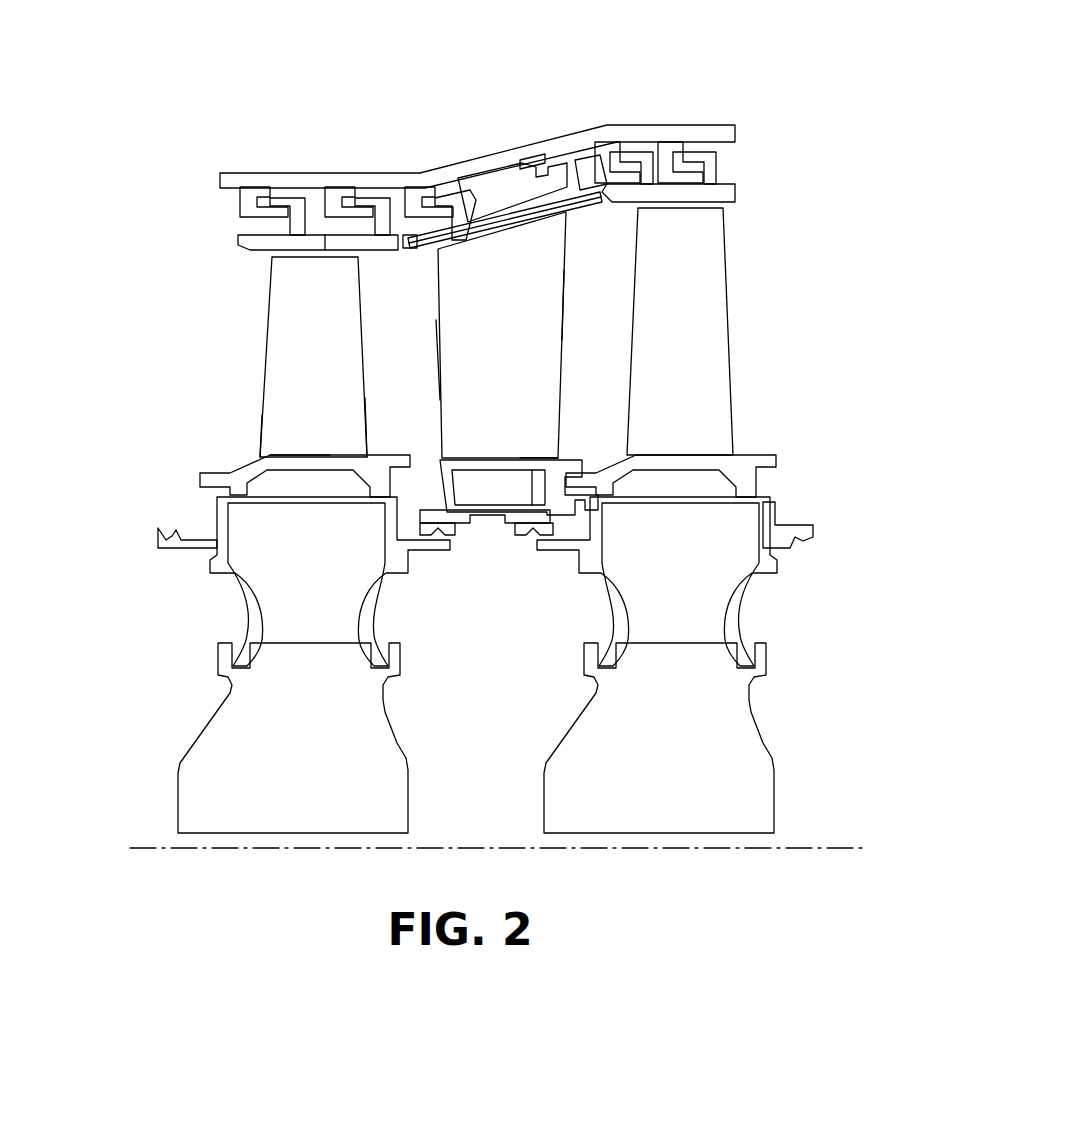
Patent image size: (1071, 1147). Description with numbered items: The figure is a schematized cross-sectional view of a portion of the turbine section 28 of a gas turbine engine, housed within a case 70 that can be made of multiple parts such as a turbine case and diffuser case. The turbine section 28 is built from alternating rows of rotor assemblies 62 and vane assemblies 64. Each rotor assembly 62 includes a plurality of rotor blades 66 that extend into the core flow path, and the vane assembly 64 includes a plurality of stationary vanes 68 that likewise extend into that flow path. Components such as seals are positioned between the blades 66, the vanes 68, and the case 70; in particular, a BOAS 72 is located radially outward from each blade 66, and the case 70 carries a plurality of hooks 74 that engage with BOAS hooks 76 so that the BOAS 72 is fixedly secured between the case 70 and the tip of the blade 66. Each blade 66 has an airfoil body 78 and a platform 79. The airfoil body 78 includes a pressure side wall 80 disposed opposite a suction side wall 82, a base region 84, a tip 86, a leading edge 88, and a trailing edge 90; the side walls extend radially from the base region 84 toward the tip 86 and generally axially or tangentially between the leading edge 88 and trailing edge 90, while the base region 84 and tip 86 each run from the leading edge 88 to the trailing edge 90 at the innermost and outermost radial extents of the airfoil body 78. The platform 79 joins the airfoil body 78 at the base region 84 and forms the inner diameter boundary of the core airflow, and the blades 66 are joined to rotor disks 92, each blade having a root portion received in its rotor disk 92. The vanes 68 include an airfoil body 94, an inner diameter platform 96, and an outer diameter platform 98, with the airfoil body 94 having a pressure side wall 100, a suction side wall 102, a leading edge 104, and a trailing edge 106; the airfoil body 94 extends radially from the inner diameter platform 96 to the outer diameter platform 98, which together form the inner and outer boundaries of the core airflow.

The turbine section 28 is at (636, 62).
The rotor assembly 62 is at (181, 573).
The vane assembly 64 is at (488, 558).
The rotor blade 66 is at (748, 344).
The stationary vane 68 is at (422, 300).
The case 70 is at (405, 172).
The BOAS 72 is at (238, 242).
The hook 74 is at (240, 208).
The BOAS hook 76 is at (300, 198).
The airfoil body 78 is at (496, 332).
The platform 79 is at (376, 465).
The pressure side wall 80 is at (282, 322).
The suction side wall 82 is at (308, 279).
The base region 84 is at (287, 455).
The tip 86 is at (324, 250).
The leading edge 88 is at (262, 415).
The trailing edge 90 is at (370, 398).
The rotor disk 92 is at (476, 738).
The airfoil body 94 is at (518, 363).
The inner diameter platform 96 is at (560, 456).
The outer diameter platform 98 is at (578, 207).
The pressure side wall 100 is at (538, 403).
The suction side wall 102 is at (530, 342).
The leading edge 104 is at (436, 360).
The trailing edge 106 is at (566, 303).